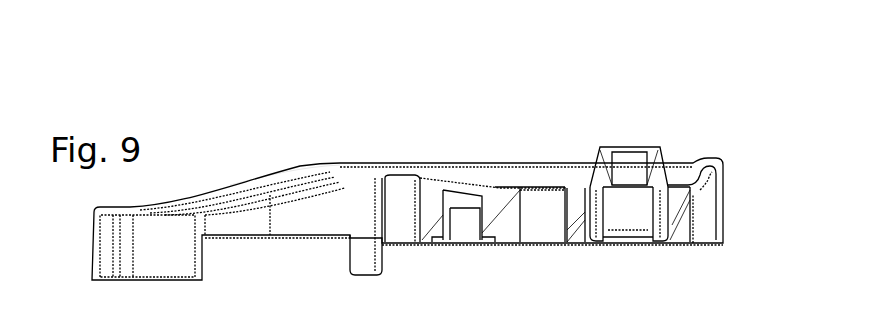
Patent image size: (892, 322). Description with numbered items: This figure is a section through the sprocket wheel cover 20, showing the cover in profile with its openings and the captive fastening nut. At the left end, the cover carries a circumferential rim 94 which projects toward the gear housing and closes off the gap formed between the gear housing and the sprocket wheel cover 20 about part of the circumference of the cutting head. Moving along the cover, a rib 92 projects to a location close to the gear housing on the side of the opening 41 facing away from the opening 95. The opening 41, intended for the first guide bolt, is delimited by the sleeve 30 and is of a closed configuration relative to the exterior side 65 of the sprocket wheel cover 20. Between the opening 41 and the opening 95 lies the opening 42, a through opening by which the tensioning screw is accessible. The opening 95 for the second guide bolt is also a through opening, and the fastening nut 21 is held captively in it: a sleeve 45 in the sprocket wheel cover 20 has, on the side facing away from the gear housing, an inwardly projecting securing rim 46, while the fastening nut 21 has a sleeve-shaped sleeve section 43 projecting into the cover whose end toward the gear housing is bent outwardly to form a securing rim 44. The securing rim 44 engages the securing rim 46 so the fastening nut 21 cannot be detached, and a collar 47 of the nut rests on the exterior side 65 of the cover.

The sprocket wheel cover 20 is at (250, 178).
The fastening nut 21 is at (602, 180).
The sleeve 30 is at (443, 220).
The opening 41 is at (460, 232).
The opening 42 is at (540, 235).
The sleeve section 43 is at (668, 215).
The securing rim 44 is at (658, 238).
The sleeve 45 is at (588, 240).
The securing rim 46 is at (588, 188).
The collar 47 is at (672, 180).
The exterior side 65 is at (343, 160).
The rib 92 is at (382, 258).
The circumferential rim 94 is at (92, 240).
The opening 95 is at (630, 218).